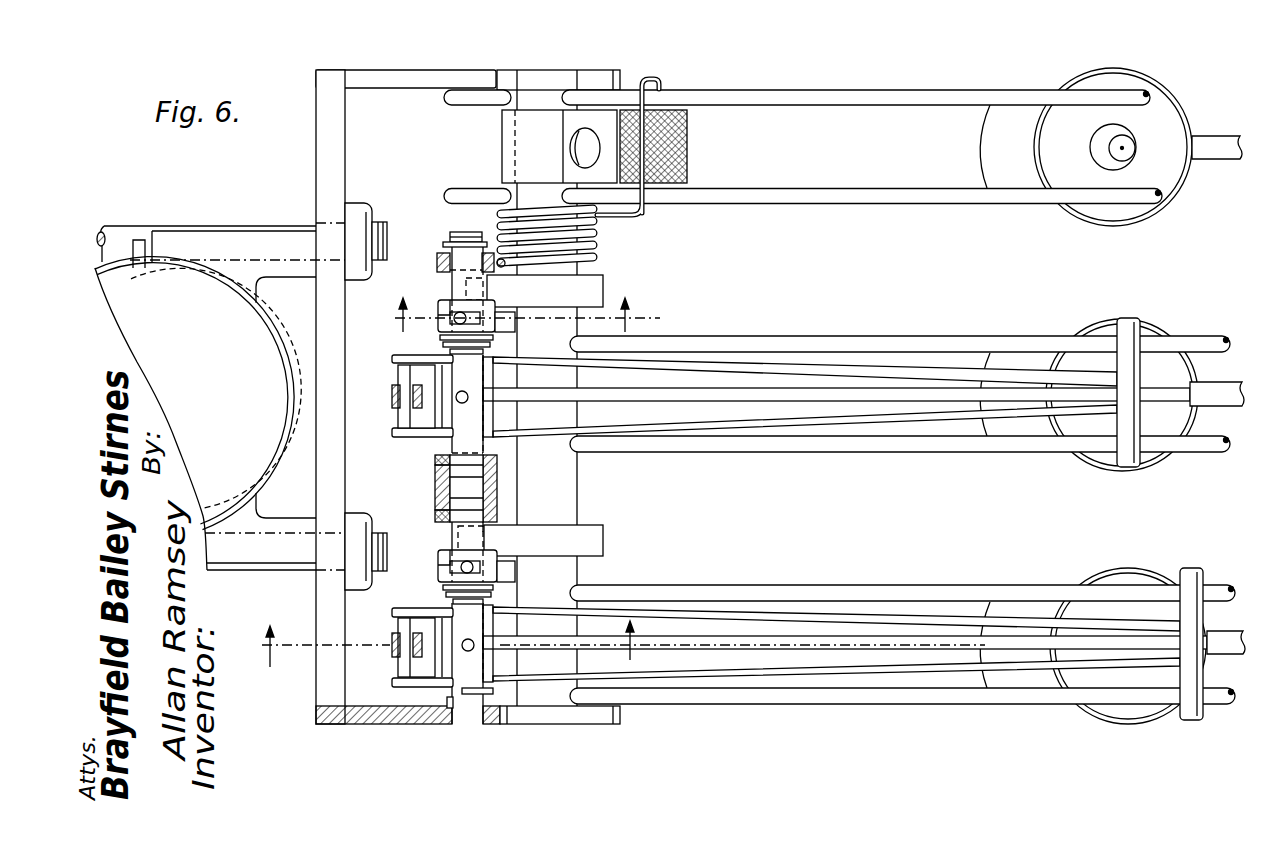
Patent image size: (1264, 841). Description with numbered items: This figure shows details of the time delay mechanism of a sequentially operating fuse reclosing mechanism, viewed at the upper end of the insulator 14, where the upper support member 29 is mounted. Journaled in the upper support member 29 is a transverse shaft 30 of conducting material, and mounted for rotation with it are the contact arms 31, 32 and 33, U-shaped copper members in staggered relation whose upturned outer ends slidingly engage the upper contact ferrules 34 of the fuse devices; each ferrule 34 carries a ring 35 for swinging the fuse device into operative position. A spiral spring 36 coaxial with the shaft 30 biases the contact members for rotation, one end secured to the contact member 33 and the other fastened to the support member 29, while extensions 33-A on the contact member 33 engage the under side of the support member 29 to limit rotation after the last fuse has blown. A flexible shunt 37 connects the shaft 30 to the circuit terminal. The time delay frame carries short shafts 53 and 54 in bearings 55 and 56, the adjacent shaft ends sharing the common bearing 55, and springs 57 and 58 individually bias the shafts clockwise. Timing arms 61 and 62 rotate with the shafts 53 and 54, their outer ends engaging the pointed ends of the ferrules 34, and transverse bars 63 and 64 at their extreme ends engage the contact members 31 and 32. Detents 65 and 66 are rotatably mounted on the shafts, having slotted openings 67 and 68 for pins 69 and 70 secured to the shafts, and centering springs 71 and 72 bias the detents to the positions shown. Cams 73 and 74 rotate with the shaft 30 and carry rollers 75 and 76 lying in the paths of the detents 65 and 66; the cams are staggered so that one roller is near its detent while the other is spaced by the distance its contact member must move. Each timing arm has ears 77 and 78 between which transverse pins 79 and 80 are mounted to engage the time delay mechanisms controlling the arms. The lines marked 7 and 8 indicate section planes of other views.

The section line 7- 7 is at (615, 649).
The section line 8- 8 is at (520, 315).
The insulator 14 is at (263, 314).
The upper support member 29 is at (475, 71).
The transverse shaft 30 is at (578, 480).
The contact arm 31 is at (858, 589).
The contact arm 32 is at (892, 337).
The contact arm 33 is at (922, 89).
The extensions 33-A is at (480, 103).
The upper contact ferrule 34 is at (1172, 101).
The ring 35 is at (1222, 160).
The spiral spring 36 is at (598, 232).
The flexible shunt 37 is at (688, 143).
The short shaft 53 is at (455, 533).
The short shaft 54 is at (484, 286).
The bearing 55 is at (436, 486).
The bearing 56 is at (437, 262).
The spring 57 is at (478, 703).
The spring 58 is at (452, 243).
The timing arm 61 is at (877, 661).
The timing arm 62 is at (888, 405).
The transverse bar 63 is at (1195, 573).
The transverse bar 64 is at (1128, 320).
The detent 65 is at (440, 584).
The detent 66 is at (443, 331).
The slotted opening 67 is at (440, 569).
The slotted opening 68 is at (442, 316).
The pin 69 is at (462, 562).
The pin 70 is at (457, 312).
The centering spring 71 is at (492, 596).
The centering spring 72 is at (486, 344).
The cam 73 is at (603, 541).
The cam 74 is at (600, 290).
The roller 75 is at (516, 572).
The roller 76 is at (515, 325).
The ears 77 is at (395, 612).
The ears 78 is at (393, 357).
The transverse pin 79 is at (400, 658).
The transverse pin 80 is at (403, 378).